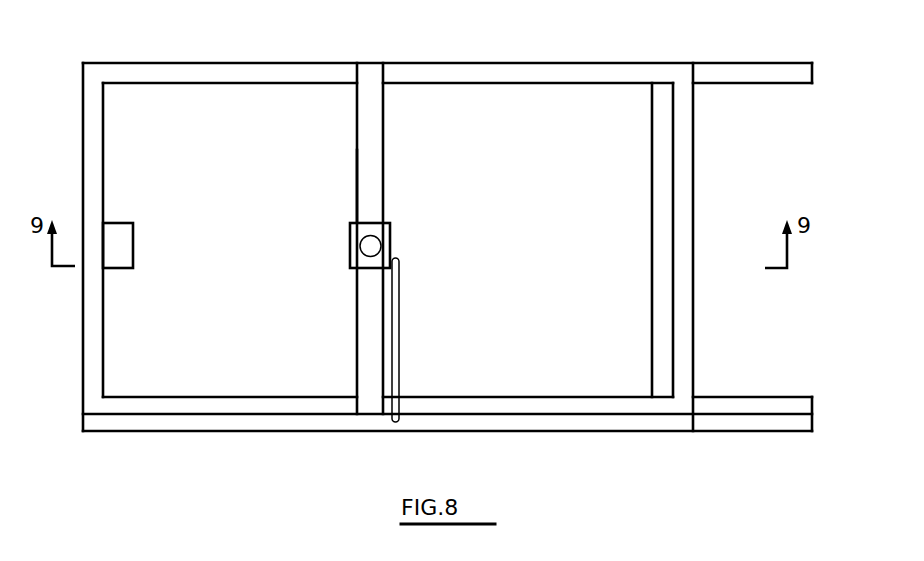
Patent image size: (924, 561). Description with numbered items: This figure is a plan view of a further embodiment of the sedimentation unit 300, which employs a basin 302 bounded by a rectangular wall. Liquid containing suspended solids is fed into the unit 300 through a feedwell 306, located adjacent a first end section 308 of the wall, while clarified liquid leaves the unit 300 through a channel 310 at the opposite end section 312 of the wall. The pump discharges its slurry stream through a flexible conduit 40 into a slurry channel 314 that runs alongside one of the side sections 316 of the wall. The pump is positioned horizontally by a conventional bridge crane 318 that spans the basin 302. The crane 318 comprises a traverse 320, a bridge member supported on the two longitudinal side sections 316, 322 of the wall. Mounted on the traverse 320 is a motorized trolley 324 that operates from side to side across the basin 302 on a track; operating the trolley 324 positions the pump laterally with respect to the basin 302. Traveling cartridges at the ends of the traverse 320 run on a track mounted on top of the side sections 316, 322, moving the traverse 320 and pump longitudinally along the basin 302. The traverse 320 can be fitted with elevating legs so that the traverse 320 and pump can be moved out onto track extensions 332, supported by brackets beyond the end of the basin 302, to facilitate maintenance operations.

The sedimentation unit 300 is at (184, 453).
The basin 302 is at (613, 312).
The feedwell 306 is at (133, 245).
The first end section 308 is at (83, 300).
The channel 310 is at (663, 305).
The opposite end section 312 is at (688, 335).
The channel 314 is at (507, 432).
The side section 316 is at (493, 405).
The bridge crane 318 is at (403, 155).
The traverse 320 is at (357, 187).
The longitudinal side section 322 is at (441, 80).
The motorized trolley 324 is at (385, 237).
The track extensions 332 is at (770, 400).
The flexible conduit 40 is at (398, 350).